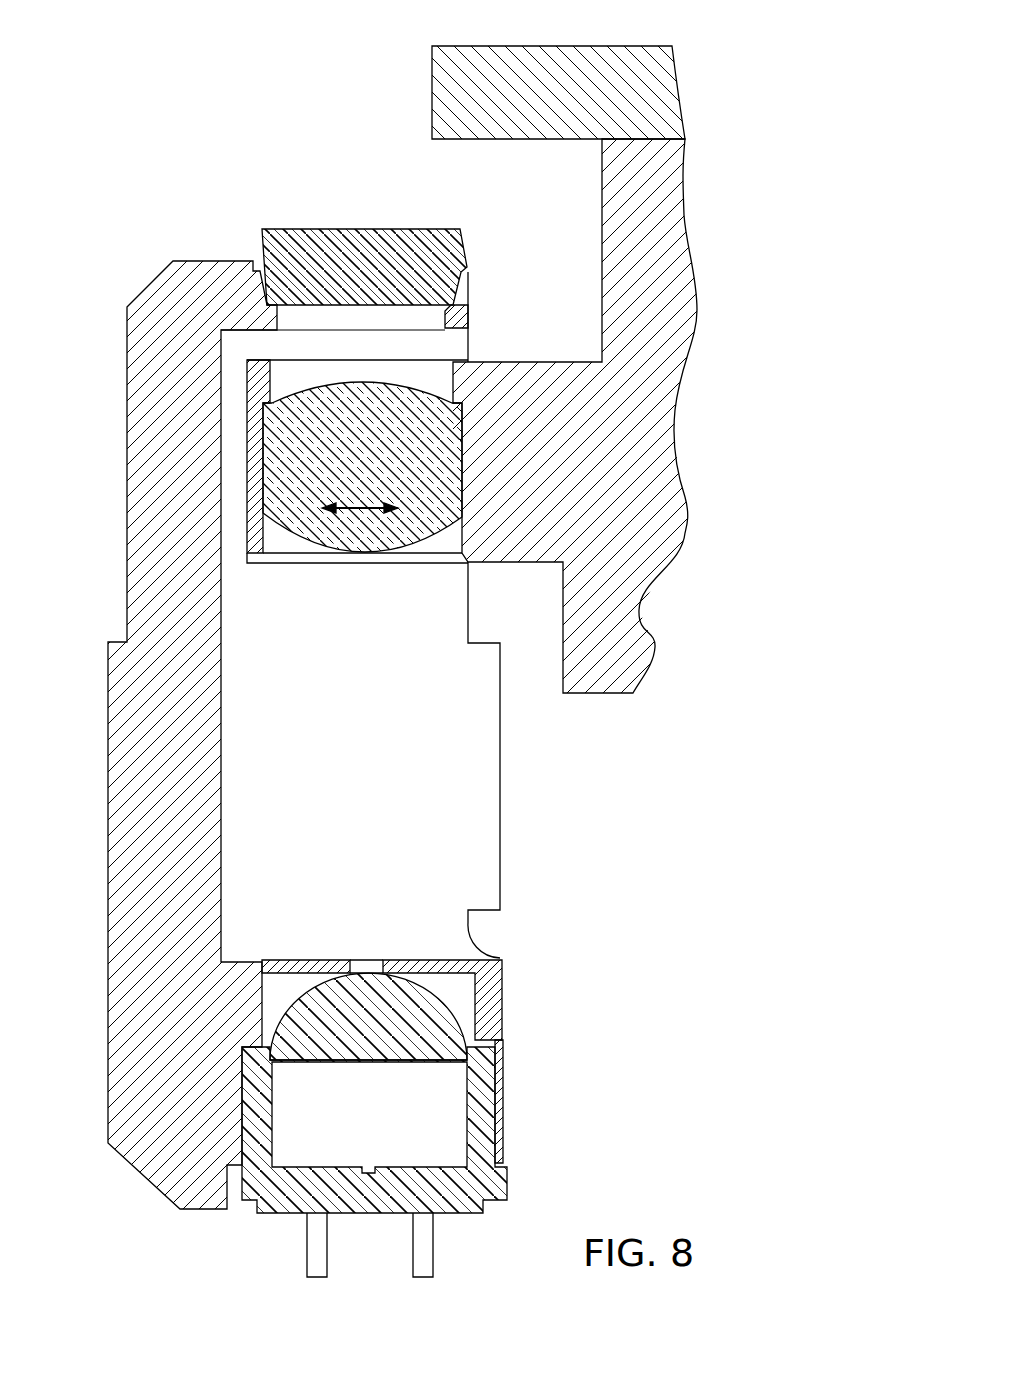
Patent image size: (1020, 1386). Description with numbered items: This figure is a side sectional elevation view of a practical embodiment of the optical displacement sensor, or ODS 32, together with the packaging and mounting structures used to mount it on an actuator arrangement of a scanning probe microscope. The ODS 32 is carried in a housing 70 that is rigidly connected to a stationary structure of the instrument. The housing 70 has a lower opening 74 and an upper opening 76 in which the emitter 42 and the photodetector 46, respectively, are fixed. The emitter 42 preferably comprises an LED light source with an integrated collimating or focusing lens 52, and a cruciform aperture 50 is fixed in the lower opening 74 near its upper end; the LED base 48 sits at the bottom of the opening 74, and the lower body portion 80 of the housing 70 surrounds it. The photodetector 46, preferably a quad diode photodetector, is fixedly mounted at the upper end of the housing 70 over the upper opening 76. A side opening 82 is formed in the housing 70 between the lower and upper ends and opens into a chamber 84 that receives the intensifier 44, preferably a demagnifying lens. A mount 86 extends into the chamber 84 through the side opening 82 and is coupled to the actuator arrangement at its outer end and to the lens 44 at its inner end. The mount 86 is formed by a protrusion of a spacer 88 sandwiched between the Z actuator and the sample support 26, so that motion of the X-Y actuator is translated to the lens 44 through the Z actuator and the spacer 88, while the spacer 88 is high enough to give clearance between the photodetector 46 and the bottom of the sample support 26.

The sample support 26 is at (640, 40).
The ODS 32 is at (137, 199).
The emitter 42 is at (513, 1078).
The intensifier 44 is at (350, 540).
The photodetector 46 is at (417, 235).
The LED base 48 is at (498, 1130).
The cruciform aperture 50 is at (505, 962).
The collimating or focusing lens 52 is at (435, 1030).
The housing 70 is at (125, 295).
The lower opening 74 is at (498, 1115).
The upper opening 76 is at (447, 327).
The housing lower portion 80 is at (221, 770).
The side opening 82 is at (467, 557).
The chamber 84 is at (250, 393).
The mount 86 is at (527, 543).
The spacer 88 is at (675, 200).